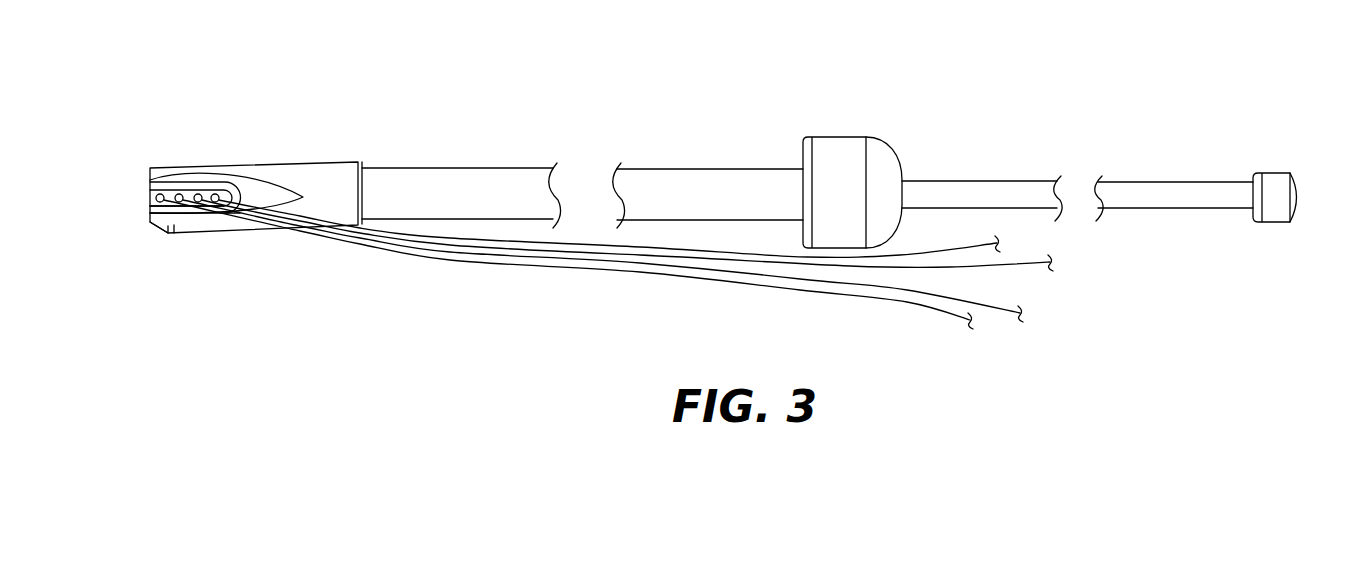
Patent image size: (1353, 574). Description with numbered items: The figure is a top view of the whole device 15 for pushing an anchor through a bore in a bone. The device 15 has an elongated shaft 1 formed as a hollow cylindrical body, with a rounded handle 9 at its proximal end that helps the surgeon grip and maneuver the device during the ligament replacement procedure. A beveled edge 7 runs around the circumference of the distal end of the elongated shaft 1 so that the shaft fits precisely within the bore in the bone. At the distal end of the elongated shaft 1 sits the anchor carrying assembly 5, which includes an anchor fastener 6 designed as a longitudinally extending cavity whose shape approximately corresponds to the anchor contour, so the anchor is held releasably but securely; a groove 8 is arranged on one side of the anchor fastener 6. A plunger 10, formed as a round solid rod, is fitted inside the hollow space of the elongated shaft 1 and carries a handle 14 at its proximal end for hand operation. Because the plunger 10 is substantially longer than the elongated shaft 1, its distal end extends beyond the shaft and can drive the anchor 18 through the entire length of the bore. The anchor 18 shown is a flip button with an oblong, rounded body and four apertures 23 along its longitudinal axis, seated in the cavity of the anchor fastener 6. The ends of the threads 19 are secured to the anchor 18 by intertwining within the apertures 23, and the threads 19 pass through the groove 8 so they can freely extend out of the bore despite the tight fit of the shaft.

The elongated shaft 1 is at (474, 180).
The anchor carrying assembly 5 is at (310, 175).
The anchor fastener 6 is at (182, 207).
The beveled edge 7 is at (155, 227).
The groove 8 is at (242, 188).
The handle 9 is at (833, 158).
The plunger 10 is at (1007, 187).
The handle 14 is at (1273, 182).
The device 15 is at (1035, 78).
The anchor 18 is at (150, 200).
The threads 19 is at (488, 262).
The apertures 23 is at (160, 195).